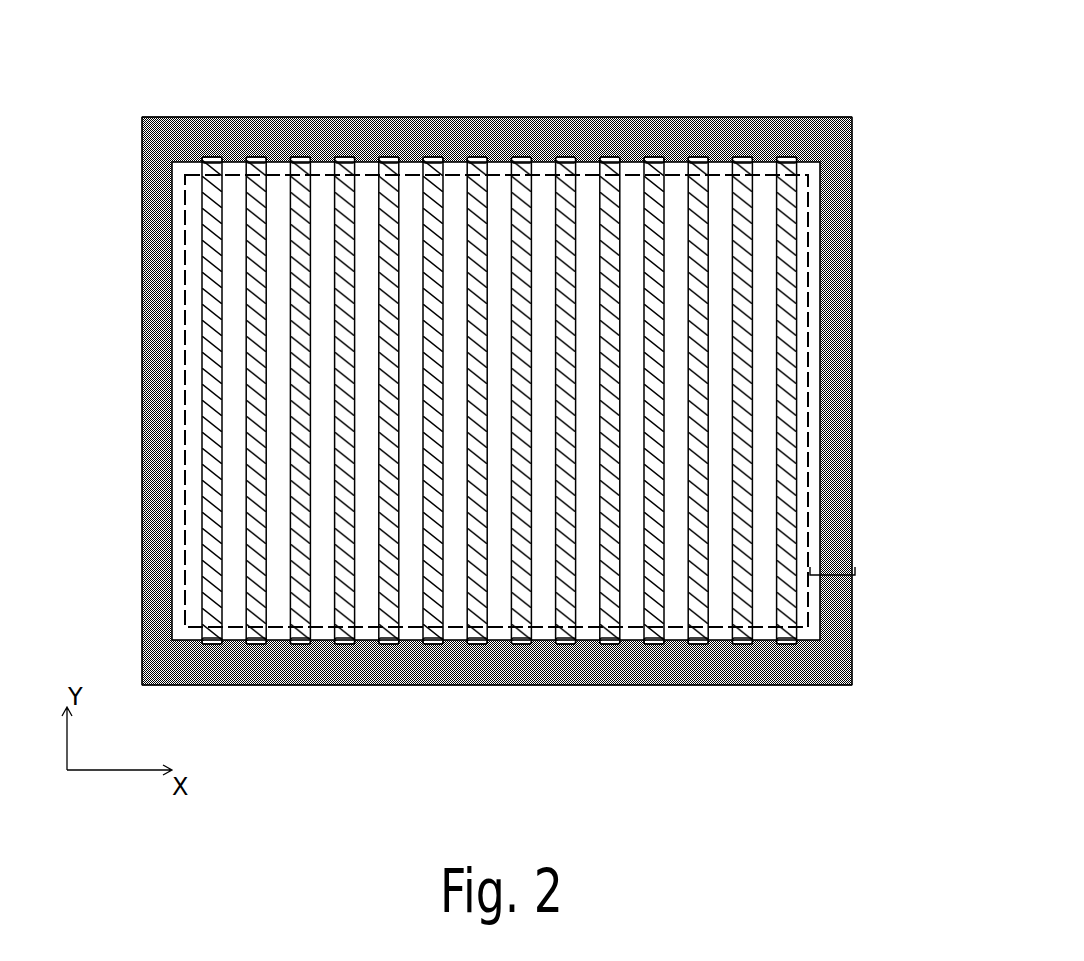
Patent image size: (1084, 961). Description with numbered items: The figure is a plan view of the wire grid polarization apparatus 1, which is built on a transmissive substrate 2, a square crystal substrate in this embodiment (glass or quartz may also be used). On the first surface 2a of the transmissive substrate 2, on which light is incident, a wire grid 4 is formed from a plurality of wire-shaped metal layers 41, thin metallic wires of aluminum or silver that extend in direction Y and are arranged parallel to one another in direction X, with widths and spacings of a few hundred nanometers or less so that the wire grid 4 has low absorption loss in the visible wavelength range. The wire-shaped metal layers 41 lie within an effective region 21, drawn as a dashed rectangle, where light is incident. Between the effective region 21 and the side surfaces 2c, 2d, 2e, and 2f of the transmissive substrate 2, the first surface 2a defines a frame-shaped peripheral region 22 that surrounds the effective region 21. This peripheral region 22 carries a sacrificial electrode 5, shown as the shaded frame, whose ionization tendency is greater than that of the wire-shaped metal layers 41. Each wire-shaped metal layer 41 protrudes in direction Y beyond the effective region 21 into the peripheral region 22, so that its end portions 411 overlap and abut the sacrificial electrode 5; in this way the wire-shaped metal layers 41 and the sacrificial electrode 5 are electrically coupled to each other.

The wire grid polarization apparatus 1 is at (502, 399).
The transmissive substrate 2 is at (502, 411).
The first surface 2a is at (765, 508).
The side surface 2c is at (628, 685).
The side surface 2d is at (853, 233).
The side surface 2e is at (742, 117).
The side surface 2f is at (142, 383).
The effective region 21 is at (808, 547).
The peripheral region 22 is at (834, 575).
The wire grid 4 is at (499, 460).
The wire-shaped metal layer 41 is at (557, 565).
The end portion 411 is at (520, 158).
The sacrificial electrode 5 is at (820, 667).